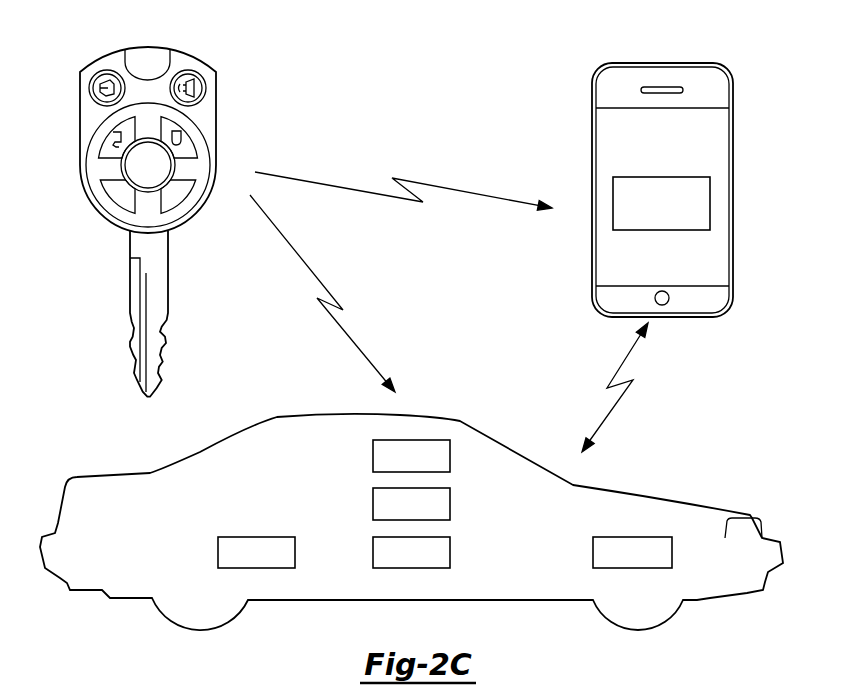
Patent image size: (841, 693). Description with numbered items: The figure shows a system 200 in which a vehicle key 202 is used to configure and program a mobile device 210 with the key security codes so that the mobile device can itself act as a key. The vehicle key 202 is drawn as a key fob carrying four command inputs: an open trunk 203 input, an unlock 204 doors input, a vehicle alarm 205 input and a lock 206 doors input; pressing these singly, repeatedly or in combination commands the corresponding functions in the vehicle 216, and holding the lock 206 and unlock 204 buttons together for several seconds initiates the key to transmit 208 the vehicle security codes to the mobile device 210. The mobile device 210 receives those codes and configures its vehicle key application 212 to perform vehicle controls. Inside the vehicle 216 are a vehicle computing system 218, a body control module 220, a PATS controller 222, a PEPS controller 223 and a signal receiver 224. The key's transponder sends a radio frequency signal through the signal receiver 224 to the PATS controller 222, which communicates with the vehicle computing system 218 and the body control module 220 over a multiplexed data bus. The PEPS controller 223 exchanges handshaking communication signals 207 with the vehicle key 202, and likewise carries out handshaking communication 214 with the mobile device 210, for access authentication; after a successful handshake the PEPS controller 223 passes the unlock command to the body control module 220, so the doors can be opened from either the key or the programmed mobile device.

The system 200 is at (728, 36).
The vehicle key 202 is at (197, 57).
The open trunk input 203 is at (89, 88).
The unlock doors input 204 is at (103, 127).
The vehicle alarm input 205 is at (206, 88).
The lock doors input 206 is at (193, 127).
The communication signals 207 is at (290, 247).
The transmission of security codes 208 is at (345, 188).
The mobile device 210 is at (733, 133).
The vehicle key application 212 is at (710, 203).
The communication 214 is at (617, 403).
The vehicle 216 is at (428, 410).
The vehicle computing system 218 is at (593, 555).
The body control module 220 is at (218, 555).
The PATS controller 222 is at (373, 555).
The PEPS controller 223 is at (373, 505).
The signal receiver 224 is at (373, 457).